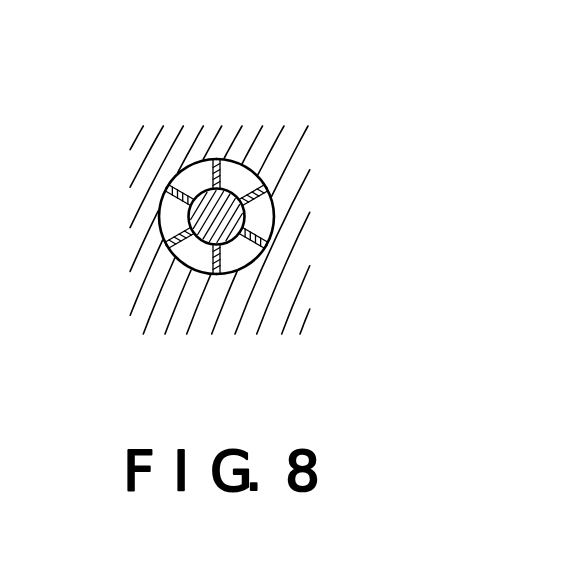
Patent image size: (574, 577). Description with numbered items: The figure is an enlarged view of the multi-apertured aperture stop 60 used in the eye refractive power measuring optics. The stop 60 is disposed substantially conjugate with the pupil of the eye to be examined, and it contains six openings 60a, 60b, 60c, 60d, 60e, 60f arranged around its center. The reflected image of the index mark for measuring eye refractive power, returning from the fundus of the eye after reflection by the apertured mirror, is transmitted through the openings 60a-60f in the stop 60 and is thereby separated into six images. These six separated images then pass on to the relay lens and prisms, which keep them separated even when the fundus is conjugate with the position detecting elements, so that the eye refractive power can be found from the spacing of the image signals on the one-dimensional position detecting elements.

The multi-apertured aperture stop 60 is at (263, 185).
The opening 60a is at (260, 217).
The opening 60b is at (257, 251).
The opening 60c is at (184, 263).
The opening 60d is at (173, 217).
The opening 60e is at (197, 185).
The opening 60f is at (229, 175).